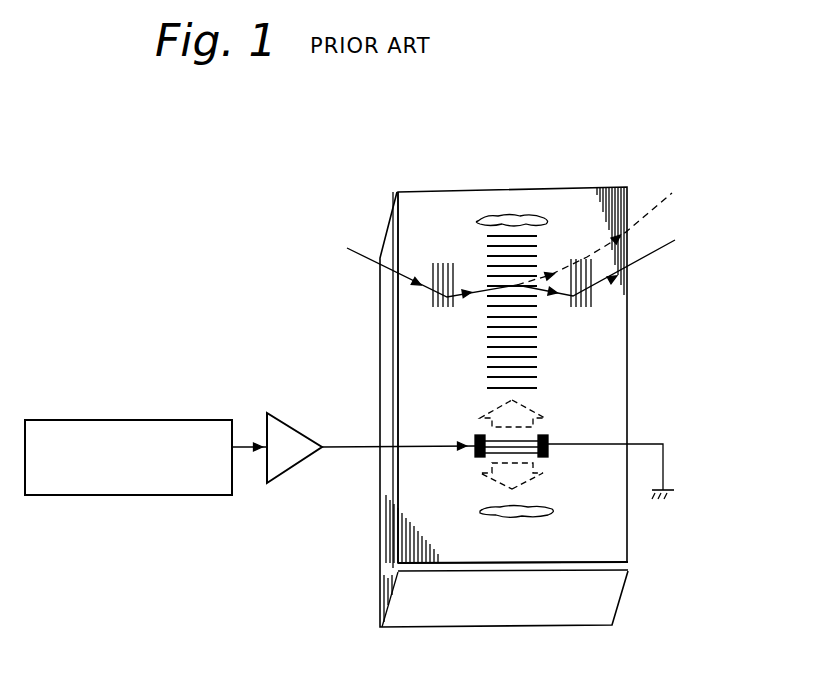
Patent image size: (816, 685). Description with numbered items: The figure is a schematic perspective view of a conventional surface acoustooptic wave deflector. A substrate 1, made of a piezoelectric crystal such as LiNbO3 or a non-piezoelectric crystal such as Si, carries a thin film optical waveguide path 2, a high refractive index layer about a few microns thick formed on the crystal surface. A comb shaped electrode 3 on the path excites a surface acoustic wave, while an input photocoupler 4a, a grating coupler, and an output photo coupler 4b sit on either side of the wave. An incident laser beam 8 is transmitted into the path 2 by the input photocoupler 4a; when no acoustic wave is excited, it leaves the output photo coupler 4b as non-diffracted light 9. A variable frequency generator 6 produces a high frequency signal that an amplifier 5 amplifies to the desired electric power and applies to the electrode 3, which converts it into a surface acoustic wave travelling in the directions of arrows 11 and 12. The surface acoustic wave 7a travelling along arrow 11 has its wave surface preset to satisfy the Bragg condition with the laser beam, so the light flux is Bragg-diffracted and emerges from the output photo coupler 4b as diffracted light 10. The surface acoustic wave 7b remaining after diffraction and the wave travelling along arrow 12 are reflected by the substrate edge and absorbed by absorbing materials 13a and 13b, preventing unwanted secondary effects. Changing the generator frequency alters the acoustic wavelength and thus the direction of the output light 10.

The substrate 1 is at (423, 613).
The thin film optical waveguide path 2 is at (620, 568).
The comb shaped electrode 3 is at (545, 437).
The input photocoupler 4a is at (432, 272).
The output photo coupler 4b is at (575, 254).
The amplifier 5 is at (292, 425).
The variable frequency generator 6 is at (122, 420).
The surface acoustic wave 7a is at (495, 347).
The surface acoustic wave 7b is at (492, 243).
The incident laser beam 8 is at (363, 255).
The non-diffracted light 9 is at (650, 210).
The diffracted light 10 is at (635, 272).
The arrow 11 is at (497, 410).
The arrow 12 is at (495, 477).
The absorbing material 13a is at (510, 217).
The absorbing material 13b is at (540, 513).